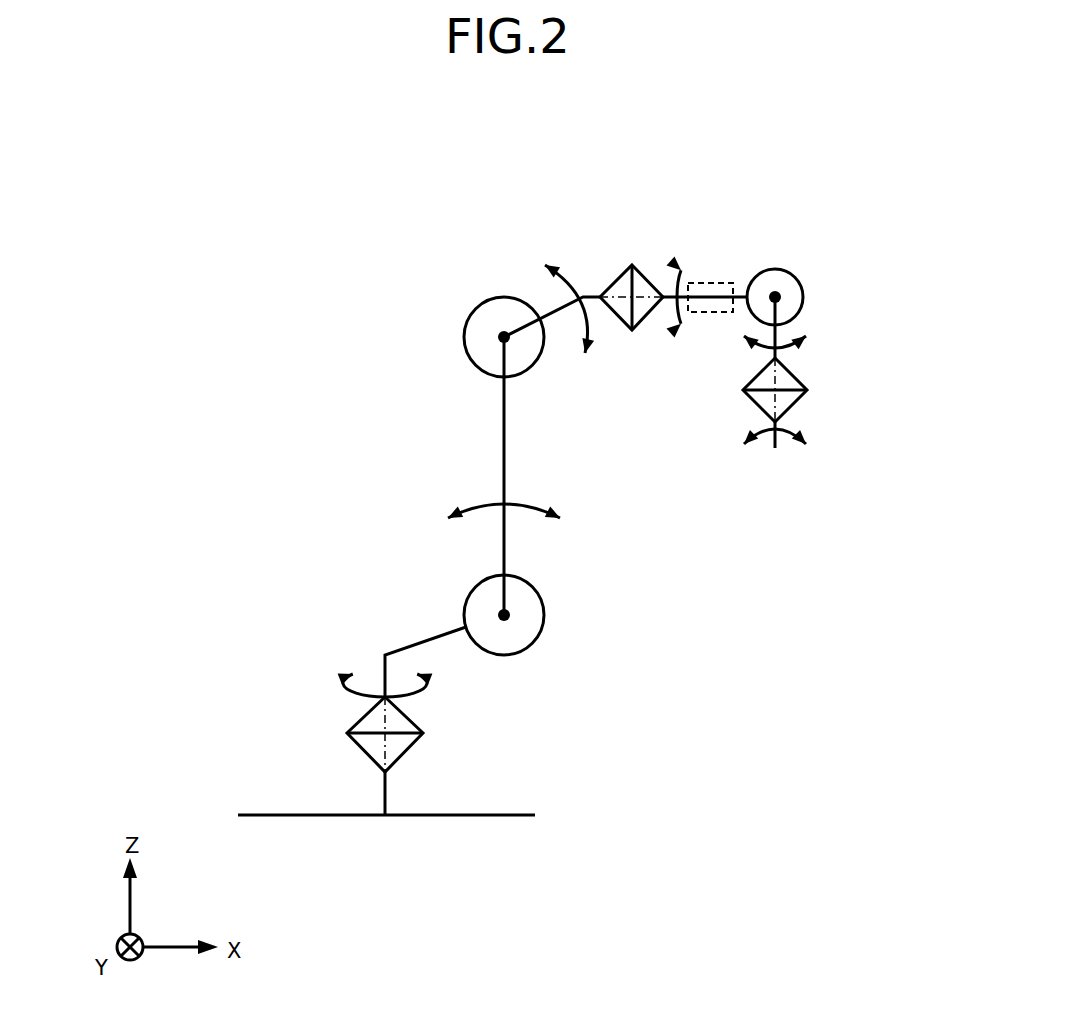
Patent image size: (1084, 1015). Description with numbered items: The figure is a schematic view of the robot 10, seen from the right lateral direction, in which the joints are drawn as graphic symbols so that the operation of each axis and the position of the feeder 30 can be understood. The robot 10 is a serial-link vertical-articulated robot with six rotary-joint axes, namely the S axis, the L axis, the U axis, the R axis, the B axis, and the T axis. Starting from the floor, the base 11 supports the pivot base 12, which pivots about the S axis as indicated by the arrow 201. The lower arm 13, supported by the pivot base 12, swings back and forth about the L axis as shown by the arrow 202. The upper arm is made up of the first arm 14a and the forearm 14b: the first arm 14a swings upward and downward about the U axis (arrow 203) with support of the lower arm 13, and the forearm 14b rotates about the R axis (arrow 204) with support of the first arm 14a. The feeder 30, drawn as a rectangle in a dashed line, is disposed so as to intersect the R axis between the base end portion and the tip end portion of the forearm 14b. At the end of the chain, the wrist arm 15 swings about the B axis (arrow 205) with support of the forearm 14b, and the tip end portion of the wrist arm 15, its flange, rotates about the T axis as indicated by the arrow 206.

The robot 10 is at (398, 178).
The base 11 is at (384, 785).
The pivot base 12 is at (450, 634).
The lower arm 13 is at (506, 460).
The first arm 14a is at (559, 312).
The forearm 14b is at (684, 300).
The wrist arm 15 is at (778, 353).
The feeder 30 is at (716, 272).
The arrow 201 is at (345, 682).
The arrow 202 is at (474, 504).
The arrow 203 is at (575, 290).
The arrow 204 is at (668, 257).
The arrow 205 is at (792, 345).
The arrow 206 is at (815, 436).
The S axis S is at (383, 725).
The L axis L is at (510, 618).
The U axis U is at (500, 332).
The R axis R is at (625, 297).
The B axis B is at (784, 300).
The T axis T is at (790, 400).